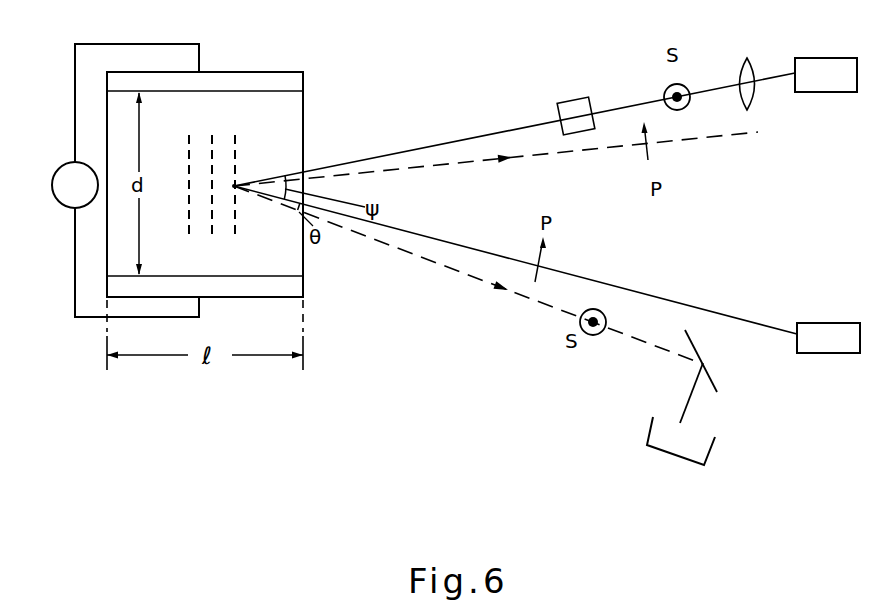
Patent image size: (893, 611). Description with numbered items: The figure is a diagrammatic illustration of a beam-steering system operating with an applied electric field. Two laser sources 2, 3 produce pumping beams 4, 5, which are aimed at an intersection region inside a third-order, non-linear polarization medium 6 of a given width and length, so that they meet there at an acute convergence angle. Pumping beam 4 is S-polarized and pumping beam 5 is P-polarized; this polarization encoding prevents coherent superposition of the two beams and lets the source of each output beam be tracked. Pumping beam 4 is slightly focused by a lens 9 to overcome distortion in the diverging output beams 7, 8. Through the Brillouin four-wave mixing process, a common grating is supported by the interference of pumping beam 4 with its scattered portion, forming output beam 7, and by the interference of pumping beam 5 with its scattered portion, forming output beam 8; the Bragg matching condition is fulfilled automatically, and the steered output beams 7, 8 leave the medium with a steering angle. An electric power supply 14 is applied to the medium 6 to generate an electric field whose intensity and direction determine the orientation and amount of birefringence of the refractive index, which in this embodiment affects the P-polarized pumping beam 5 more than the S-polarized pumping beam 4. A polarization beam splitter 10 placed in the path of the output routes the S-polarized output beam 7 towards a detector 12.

The laser source 2 is at (812, 60).
The laser source 3 is at (815, 323).
The pumping beam 4 is at (620, 107).
The pumping beam 5 is at (630, 292).
The third-order, non-linear polarization medium 6 is at (245, 72).
The output beam 7 is at (420, 260).
The output beam 8 is at (441, 163).
The lens 9 is at (745, 58).
The polarization beam splitter 10 is at (712, 382).
The detector 12 is at (680, 453).
The electric power supply 14 is at (59, 168).